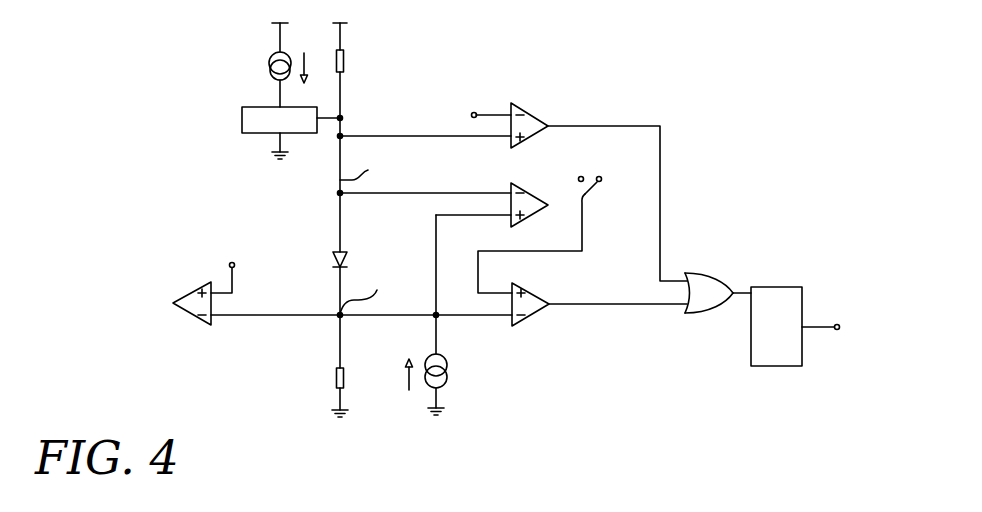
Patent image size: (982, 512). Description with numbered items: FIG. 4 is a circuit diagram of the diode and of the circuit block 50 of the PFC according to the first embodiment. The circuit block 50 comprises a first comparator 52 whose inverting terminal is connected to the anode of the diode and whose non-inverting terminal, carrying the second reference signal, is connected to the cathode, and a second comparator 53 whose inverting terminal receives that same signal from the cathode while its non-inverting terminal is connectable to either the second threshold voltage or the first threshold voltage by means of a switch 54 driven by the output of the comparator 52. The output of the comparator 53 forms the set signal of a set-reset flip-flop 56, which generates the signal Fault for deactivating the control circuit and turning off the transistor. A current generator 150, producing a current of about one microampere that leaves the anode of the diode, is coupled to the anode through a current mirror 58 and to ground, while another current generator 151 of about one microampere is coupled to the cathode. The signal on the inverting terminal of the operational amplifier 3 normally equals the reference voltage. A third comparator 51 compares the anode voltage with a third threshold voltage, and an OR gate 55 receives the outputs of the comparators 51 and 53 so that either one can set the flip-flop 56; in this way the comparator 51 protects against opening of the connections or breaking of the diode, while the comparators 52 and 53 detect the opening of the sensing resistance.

The operational amplifier 3 is at (190, 311).
The circuit block 50 is at (315, 211).
The third comparator 51 is at (535, 123).
The first comparator 52 is at (532, 194).
The second comparator 53 is at (530, 308).
The switch 54 is at (586, 194).
The OR gate 55 is at (708, 288).
The set-reset flip-flop 56 is at (788, 348).
The current mirror 58 is at (262, 133).
The current generator 150 is at (268, 65).
The current generator 151 is at (455, 384).